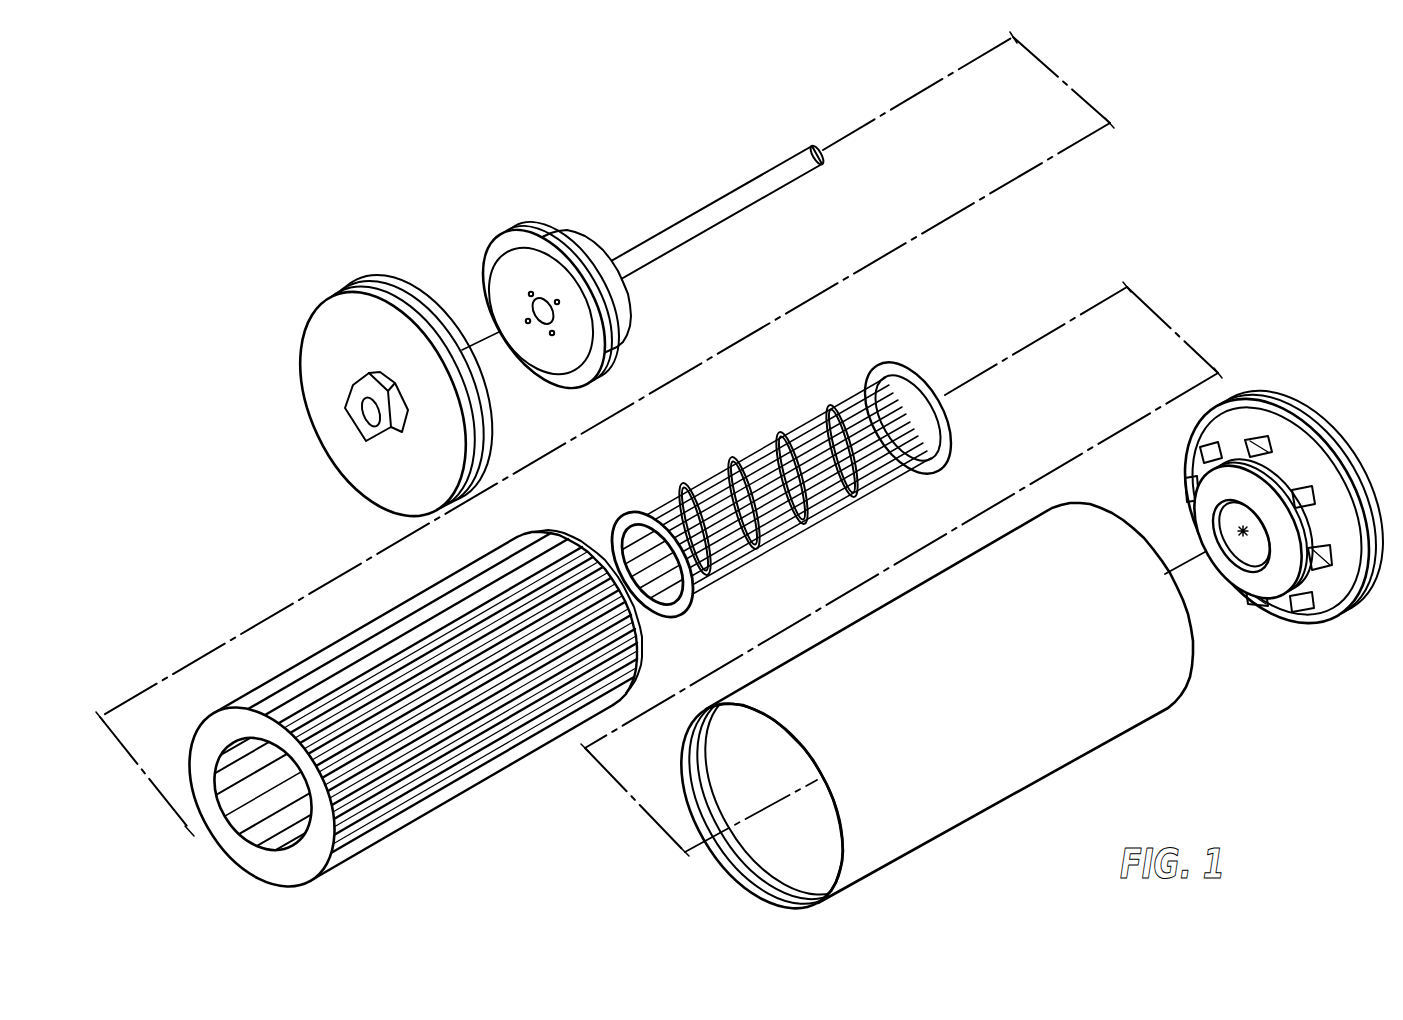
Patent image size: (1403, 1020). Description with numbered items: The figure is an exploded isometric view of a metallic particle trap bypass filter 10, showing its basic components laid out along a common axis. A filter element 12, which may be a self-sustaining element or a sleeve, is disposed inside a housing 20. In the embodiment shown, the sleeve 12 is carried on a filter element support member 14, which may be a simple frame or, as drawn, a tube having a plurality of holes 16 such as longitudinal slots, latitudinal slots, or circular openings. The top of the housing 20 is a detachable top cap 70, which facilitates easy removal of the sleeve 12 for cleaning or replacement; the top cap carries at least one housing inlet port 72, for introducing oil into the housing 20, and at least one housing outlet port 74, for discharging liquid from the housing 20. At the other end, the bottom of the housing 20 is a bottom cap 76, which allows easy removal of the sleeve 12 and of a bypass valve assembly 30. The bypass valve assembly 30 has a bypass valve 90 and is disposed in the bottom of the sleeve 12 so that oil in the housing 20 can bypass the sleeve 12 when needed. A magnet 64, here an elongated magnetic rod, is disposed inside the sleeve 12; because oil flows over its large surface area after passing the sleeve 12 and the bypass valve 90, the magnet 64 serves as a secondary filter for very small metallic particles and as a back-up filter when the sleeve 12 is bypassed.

The filter 10 is at (478, 210).
The filter element 12 is at (487, 762).
The filter element support member 14 is at (782, 470).
The holes 16 is at (926, 380).
The housing 20 is at (985, 815).
The bypass valve assembly 30 is at (538, 292).
The magnet 64 is at (683, 221).
The top cap 70 is at (1260, 517).
The housing inlet port 72 is at (1293, 608).
The housing outlet port 74 is at (1243, 531).
The bottom cap 76 is at (301, 351).
The bypass valve 90 is at (538, 312).